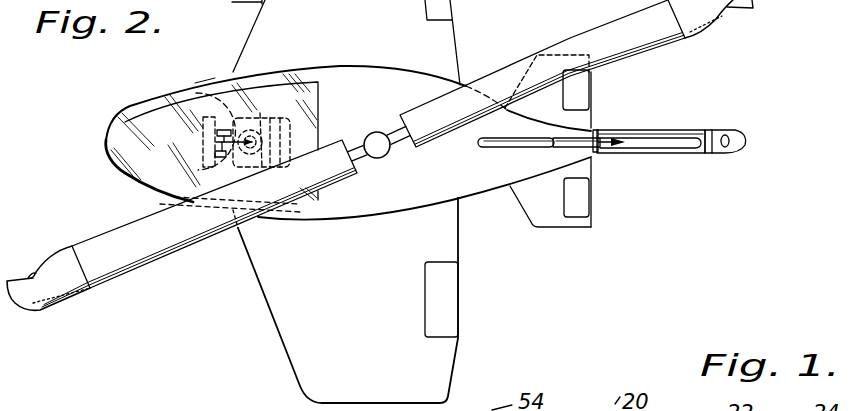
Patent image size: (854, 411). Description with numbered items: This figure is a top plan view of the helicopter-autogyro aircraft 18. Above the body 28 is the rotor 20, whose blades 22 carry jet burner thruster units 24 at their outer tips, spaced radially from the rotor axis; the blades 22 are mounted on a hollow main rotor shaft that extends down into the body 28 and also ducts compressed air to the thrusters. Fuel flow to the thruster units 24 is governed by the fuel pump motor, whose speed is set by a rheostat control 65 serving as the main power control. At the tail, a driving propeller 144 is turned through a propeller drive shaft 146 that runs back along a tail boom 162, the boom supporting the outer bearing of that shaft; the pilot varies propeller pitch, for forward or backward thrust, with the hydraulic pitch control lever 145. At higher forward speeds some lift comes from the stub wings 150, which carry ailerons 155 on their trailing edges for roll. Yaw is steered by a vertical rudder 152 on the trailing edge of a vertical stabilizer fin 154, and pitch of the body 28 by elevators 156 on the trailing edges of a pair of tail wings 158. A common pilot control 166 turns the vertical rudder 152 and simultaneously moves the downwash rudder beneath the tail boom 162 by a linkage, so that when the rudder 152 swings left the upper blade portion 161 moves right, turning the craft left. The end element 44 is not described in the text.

The helicopter-autogyro aircraft 18 is at (106, 169).
The rotor 20 is at (218, 238).
The blades 22 is at (152, 262).
The jet burner thruster units 24 is at (68, 304).
The body 28 is at (203, 78).
The end scoop of boom 44 is at (760, 19).
The rheostat control 65 is at (168, 203).
The driving propeller 144 is at (718, 147).
The hydraulic pitch control lever 145 is at (196, 93).
The propeller drive shaft 146 is at (709, 153).
The stub wings 150 is at (300, 366).
The vertical rudder 152 is at (591, 160).
The vertical stabilizer fin 154 is at (515, 144).
The ailerons 155 is at (445, 310).
The elevators 156 is at (580, 97).
The tail wings 158 is at (503, 106).
The upper blade portion 161 is at (667, 143).
The tail boom 162 is at (652, 128).
The common pilot control 166 is at (260, 113).